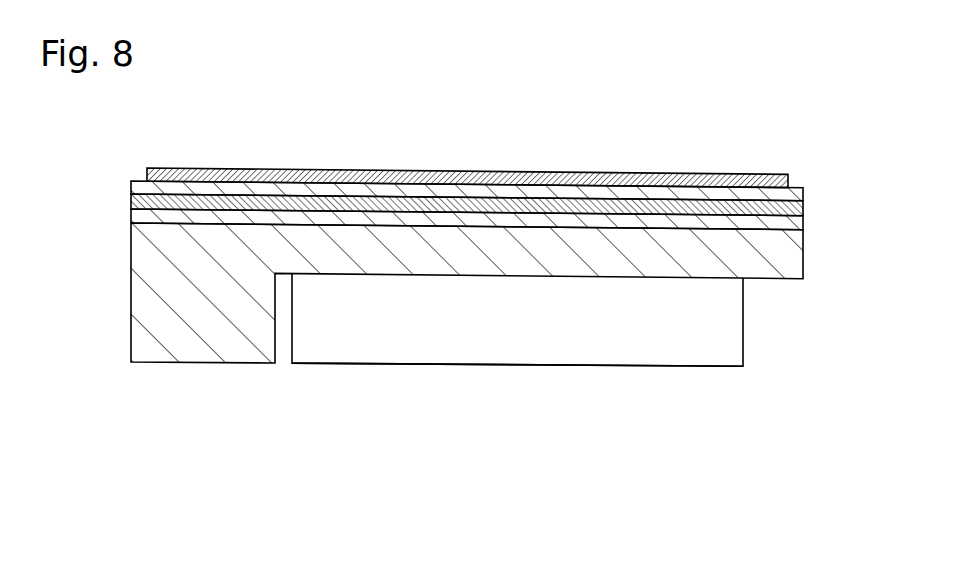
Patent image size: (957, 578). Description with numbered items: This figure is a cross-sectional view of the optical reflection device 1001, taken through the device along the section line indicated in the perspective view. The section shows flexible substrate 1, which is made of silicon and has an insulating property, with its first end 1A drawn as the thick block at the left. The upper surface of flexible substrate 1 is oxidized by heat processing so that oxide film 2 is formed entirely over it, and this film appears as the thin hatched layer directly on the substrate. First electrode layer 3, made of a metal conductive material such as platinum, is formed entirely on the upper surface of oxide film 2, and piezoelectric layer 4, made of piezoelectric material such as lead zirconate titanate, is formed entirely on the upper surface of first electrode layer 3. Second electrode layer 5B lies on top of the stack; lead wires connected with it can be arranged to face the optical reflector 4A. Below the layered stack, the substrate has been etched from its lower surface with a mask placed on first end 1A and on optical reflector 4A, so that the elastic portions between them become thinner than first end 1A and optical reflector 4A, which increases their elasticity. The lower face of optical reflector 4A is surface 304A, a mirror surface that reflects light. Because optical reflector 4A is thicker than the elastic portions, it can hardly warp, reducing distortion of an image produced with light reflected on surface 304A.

The flexible substrate 1 is at (490, 326).
The first end 1A is at (203, 348).
The oxide film 2 is at (131, 218).
The first electrode layer 3 is at (131, 202).
The piezoelectric layer 4 is at (131, 186).
The optical reflector 4A is at (518, 355).
The second electrode layer 5B is at (470, 173).
The surface of optical reflector 304A is at (604, 365).
The optical reflection device 1001 is at (464, 251).